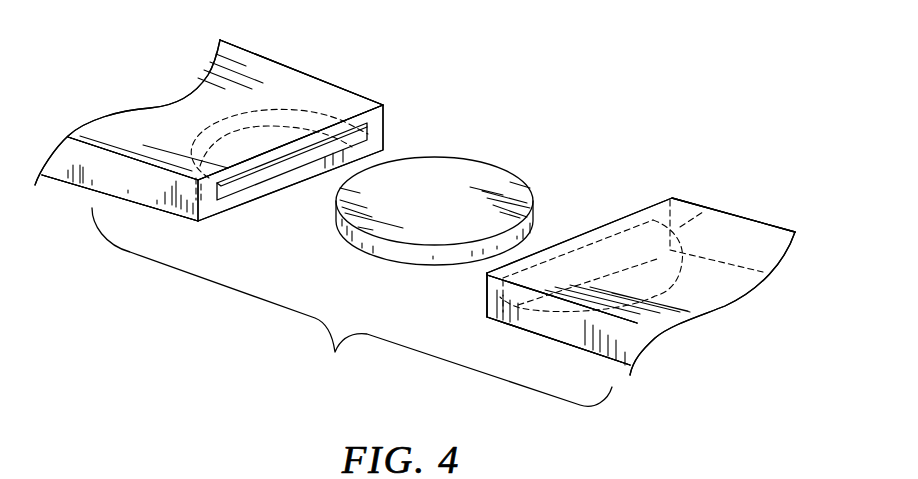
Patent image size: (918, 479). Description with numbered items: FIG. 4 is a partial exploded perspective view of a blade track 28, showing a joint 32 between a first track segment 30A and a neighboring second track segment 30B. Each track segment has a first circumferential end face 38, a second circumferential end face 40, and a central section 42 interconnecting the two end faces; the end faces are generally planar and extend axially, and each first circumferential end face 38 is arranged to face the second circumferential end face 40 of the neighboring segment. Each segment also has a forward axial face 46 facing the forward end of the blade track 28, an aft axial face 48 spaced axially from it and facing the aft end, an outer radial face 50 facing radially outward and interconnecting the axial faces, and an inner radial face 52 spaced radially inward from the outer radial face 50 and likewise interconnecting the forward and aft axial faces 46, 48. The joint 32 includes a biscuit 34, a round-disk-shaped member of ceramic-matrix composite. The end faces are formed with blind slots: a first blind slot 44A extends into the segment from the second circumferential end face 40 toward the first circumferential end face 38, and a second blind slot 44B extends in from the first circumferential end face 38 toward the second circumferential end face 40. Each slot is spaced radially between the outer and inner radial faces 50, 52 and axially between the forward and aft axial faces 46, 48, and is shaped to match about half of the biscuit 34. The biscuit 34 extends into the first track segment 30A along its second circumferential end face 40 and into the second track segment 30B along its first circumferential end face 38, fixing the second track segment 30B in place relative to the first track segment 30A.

The blade track 28 is at (609, 82).
The first track segment 30A is at (232, 144).
The second track segment 30B is at (628, 266).
The joint 32 is at (434, 145).
The biscuit 34 is at (462, 172).
The first circumferential end face 38 is at (487, 305).
The second circumferential end face 40 is at (208, 207).
The central section 42 is at (117, 127).
The first blind slot 44A is at (375, 138).
The second blind slot 44B is at (622, 268).
The forward axial face 46 is at (63, 168).
The aft axial face 48 is at (307, 98).
The outer radial face 50 is at (180, 107).
The inner radial face 52 is at (127, 190).